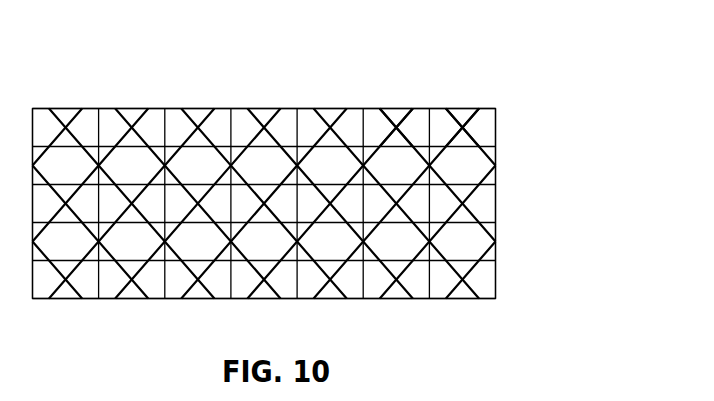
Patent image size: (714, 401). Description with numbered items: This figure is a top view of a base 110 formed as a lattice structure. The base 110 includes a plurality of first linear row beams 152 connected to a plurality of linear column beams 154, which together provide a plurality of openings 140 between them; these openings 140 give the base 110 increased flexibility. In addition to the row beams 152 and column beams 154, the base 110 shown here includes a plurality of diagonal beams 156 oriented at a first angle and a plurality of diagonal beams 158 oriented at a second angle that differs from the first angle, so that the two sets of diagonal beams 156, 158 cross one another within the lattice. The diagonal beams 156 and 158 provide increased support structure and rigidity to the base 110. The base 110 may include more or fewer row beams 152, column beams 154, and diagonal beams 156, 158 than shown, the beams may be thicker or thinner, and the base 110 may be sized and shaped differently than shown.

The base 110 is at (527, 75).
The openings 140 is at (222, 132).
The row beams 152 is at (390, 107).
The column beams 154 is at (495, 173).
The diagonal beams 156 is at (58, 117).
The diagonal beams 158 is at (397, 142).